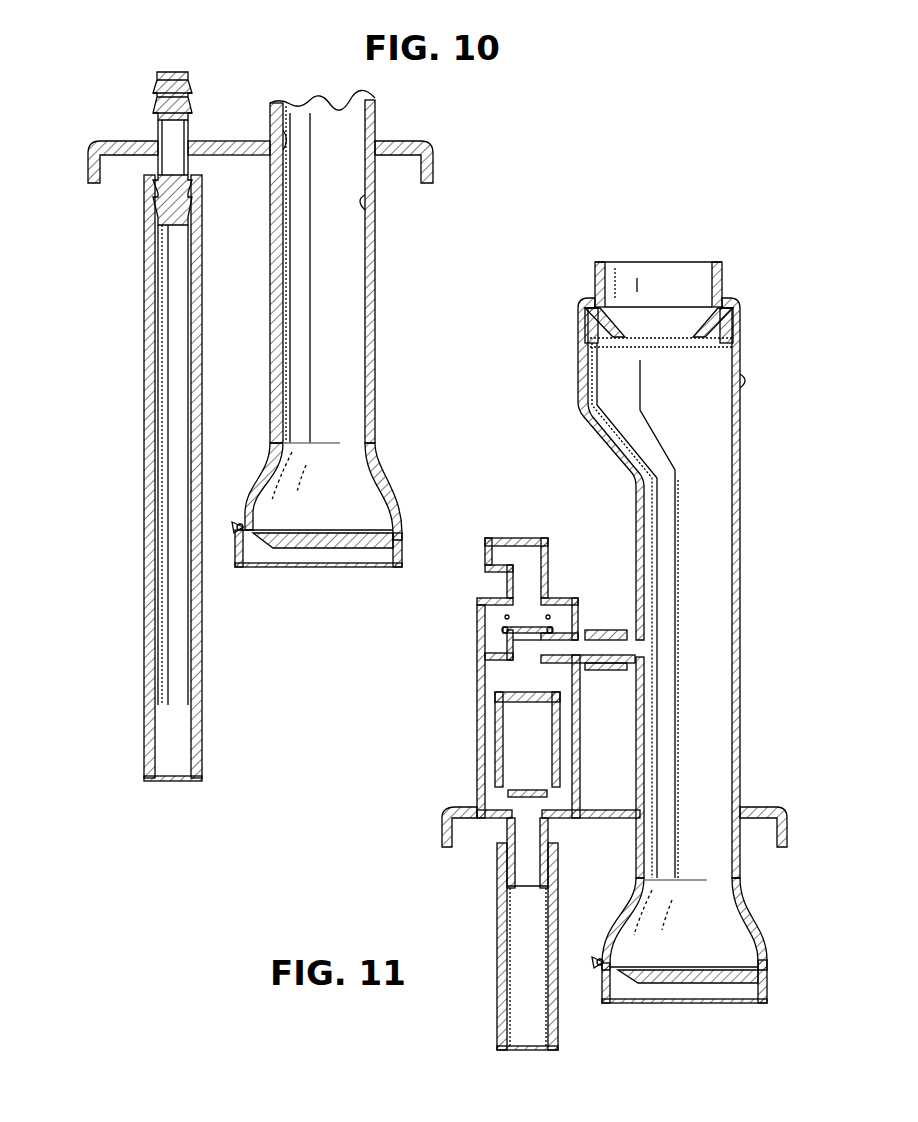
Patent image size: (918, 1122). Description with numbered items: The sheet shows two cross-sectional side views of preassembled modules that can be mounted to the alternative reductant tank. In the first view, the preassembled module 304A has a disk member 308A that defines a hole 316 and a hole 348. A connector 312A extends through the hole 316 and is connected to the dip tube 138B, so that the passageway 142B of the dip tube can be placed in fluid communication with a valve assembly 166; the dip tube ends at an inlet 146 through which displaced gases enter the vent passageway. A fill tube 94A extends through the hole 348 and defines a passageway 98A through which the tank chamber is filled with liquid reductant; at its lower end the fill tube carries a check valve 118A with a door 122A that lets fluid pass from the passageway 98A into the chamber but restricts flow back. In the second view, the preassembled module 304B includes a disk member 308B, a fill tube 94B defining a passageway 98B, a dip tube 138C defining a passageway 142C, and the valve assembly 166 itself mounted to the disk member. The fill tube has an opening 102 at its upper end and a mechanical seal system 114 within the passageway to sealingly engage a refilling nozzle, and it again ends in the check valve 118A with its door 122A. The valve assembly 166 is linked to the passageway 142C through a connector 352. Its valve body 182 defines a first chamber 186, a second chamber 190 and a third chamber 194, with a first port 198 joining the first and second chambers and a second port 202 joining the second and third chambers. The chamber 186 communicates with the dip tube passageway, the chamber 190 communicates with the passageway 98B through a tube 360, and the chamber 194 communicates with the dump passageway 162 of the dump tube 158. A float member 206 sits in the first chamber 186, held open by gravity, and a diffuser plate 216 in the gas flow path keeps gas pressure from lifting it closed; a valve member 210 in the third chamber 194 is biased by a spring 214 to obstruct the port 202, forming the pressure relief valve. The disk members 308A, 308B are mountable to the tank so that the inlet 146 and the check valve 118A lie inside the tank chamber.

In FIG. 11, the opening 102 is at (662, 250).
In FIG. 11, the mechanical seal system 114 is at (733, 300).
In FIG. 10, the check valve 118A is at (356, 516).
In FIG. 11, the check valve 118A is at (706, 958).
In FIG. 10, the door 122A is at (320, 548).
In FIG. 11, the door 122A is at (707, 983).
In FIG. 10, the dip tube 138B is at (144, 473).
In FIG. 11, the dip tube 138C is at (497, 933).
In FIG. 10, the passageway 142B is at (160, 531).
In FIG. 11, the passageway 142C is at (550, 1013).
In FIG. 10, the inlet 146 is at (148, 781).
In FIG. 11, the inlet 146 is at (503, 1050).
In FIG. 11, the dump tube 158 is at (502, 537).
In FIG. 11, the dump passageway 162 is at (515, 546).
In FIG. 11, the valve assembly 166 is at (448, 632).
In FIG. 11, the valve body 182 is at (477, 703).
In FIG. 11, the first chamber 186 is at (514, 727).
In FIG. 11, the second chamber 190 is at (512, 656).
In FIG. 11, the third chamber 194 is at (505, 617).
In FIG. 11, the first port 198 is at (537, 659).
In FIG. 11, the second port 202 is at (528, 648).
In FIG. 11, the float member 206 is at (496, 750).
In FIG. 11, the valve member 210 is at (520, 627).
In FIG. 11, the spring 214 is at (552, 615).
In FIG. 11, the diffuser plate 216 is at (535, 790).
In FIG. 10, the preassembled module 304A is at (121, 98).
In FIG. 11, the preassembled module 304B is at (772, 519).
In FIG. 10, the disk member 308A is at (390, 141).
In FIG. 11, the disk member 308B is at (760, 806).
In FIG. 10, the connector 312A is at (170, 71).
In FIG. 10, the hole 316 is at (160, 140).
In FIG. 10, the hole 348 is at (282, 137).
In FIG. 11, the connector 352 is at (528, 838).
In FIG. 11, the tube 360 is at (604, 630).
In FIG. 10, the fill tube 94A is at (388, 305).
In FIG. 11, the fill tube 94B is at (742, 360).
In FIG. 10, the passageway 98A is at (364, 196).
In FIG. 11, the passageway 98B is at (735, 380).